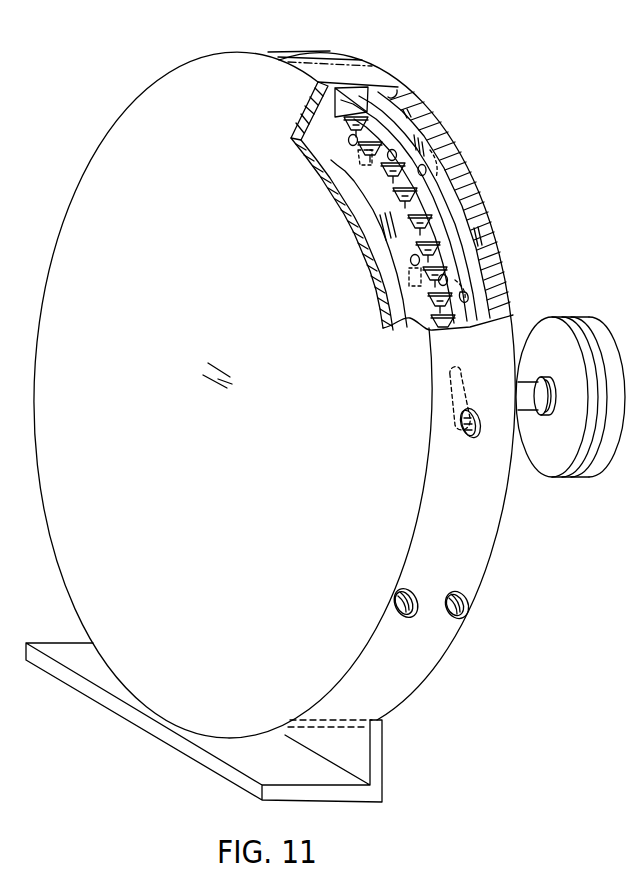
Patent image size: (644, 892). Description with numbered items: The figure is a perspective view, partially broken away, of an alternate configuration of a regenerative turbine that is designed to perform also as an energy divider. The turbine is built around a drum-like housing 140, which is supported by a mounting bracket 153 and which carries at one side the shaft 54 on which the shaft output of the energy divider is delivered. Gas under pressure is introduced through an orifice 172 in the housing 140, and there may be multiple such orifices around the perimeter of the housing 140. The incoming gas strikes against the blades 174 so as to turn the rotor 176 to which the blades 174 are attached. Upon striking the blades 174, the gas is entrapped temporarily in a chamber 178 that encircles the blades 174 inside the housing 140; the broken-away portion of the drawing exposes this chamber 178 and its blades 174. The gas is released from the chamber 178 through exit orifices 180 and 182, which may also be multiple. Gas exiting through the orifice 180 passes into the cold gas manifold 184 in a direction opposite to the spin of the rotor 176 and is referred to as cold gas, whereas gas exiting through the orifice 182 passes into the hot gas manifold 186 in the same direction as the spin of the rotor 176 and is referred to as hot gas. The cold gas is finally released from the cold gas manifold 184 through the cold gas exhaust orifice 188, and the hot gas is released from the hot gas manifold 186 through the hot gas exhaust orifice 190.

The housing 140 is at (196, 57).
The mounting bracket 153 is at (384, 757).
The shaft 54 is at (522, 382).
The orifice 172 is at (480, 440).
The blades 174 is at (385, 147).
The rotor 176 is at (416, 322).
The chamber 178 is at (398, 182).
The exit orifice 180 is at (428, 172).
The exit orifice 182 is at (354, 141).
The cold gas manifold 184 is at (388, 97).
The hot gas manifold 186 is at (320, 91).
The cold gas exhaust orifice 188 is at (466, 587).
The hot gas exhaust orifice 190 is at (410, 590).